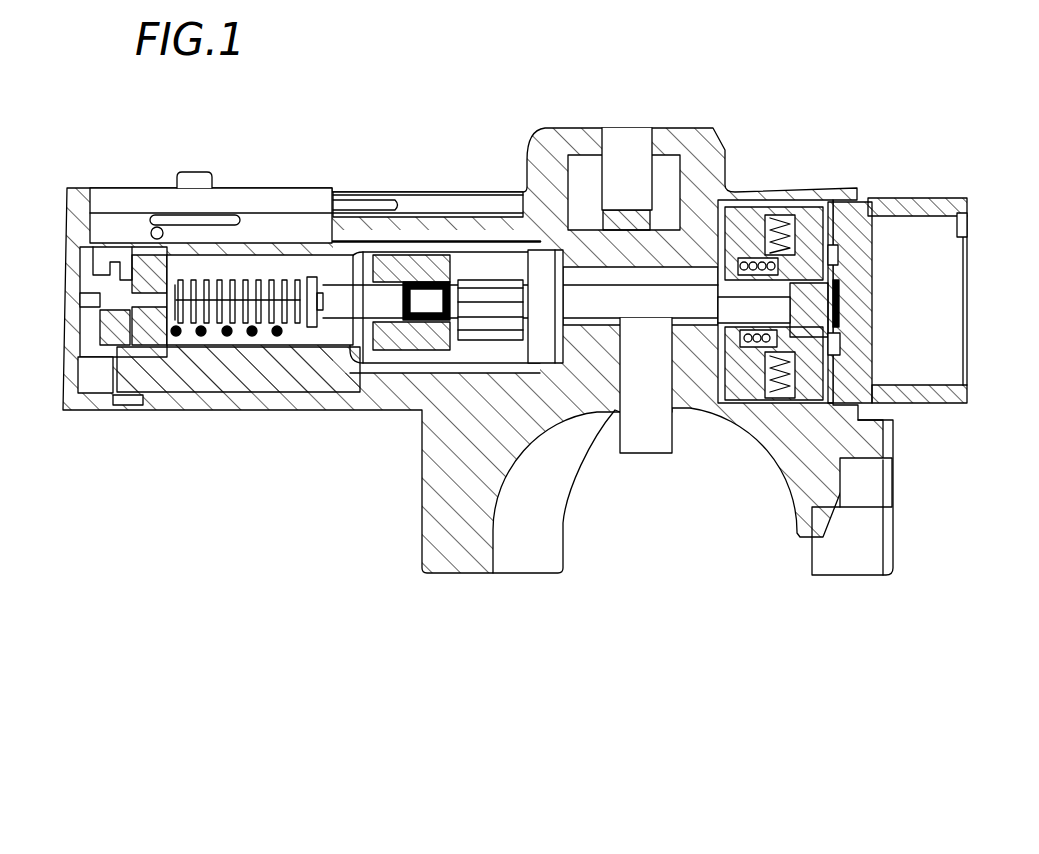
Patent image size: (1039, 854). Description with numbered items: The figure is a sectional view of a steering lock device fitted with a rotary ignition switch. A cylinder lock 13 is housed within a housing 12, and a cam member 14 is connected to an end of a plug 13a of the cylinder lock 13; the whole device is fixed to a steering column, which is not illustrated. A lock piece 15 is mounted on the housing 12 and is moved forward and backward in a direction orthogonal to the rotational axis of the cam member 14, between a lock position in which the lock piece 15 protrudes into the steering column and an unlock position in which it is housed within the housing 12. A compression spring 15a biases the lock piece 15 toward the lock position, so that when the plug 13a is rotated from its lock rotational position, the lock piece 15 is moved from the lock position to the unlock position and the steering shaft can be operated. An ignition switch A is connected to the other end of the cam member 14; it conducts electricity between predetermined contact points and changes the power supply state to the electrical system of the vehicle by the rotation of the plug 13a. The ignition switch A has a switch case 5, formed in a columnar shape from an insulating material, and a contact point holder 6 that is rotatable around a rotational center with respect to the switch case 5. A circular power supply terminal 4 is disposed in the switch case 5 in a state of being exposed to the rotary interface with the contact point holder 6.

The power supply terminal 4 is at (837, 300).
The switch case 5 is at (860, 222).
The contact point holder 6 is at (748, 247).
The housing 12 is at (383, 397).
The cylinder lock 13 is at (198, 368).
The plug 13a is at (323, 340).
The cam member 14 is at (547, 267).
The lock piece 15 is at (643, 440).
The compression spring 15a is at (657, 187).
The ignition switch A is at (924, 188).